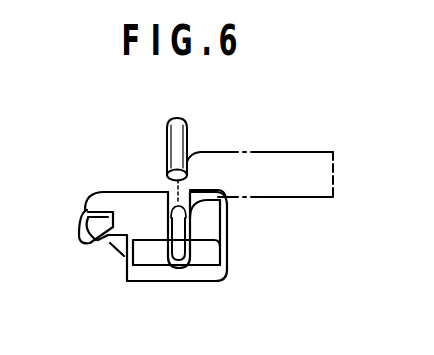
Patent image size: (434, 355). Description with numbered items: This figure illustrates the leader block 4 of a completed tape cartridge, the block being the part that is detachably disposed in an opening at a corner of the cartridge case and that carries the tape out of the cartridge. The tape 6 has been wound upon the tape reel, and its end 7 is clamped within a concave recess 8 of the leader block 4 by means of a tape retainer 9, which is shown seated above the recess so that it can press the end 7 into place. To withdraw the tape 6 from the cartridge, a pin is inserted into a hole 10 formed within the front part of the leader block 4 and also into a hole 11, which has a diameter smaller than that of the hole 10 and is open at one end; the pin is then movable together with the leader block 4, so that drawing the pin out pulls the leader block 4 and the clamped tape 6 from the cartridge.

The leader block 4 is at (208, 218).
The tape 6 is at (269, 150).
The end of the tape 7 is at (170, 188).
The concave recess 8 is at (178, 260).
The tape retainer 9 is at (187, 130).
The hole 10 is at (117, 257).
The hole 11 is at (97, 251).